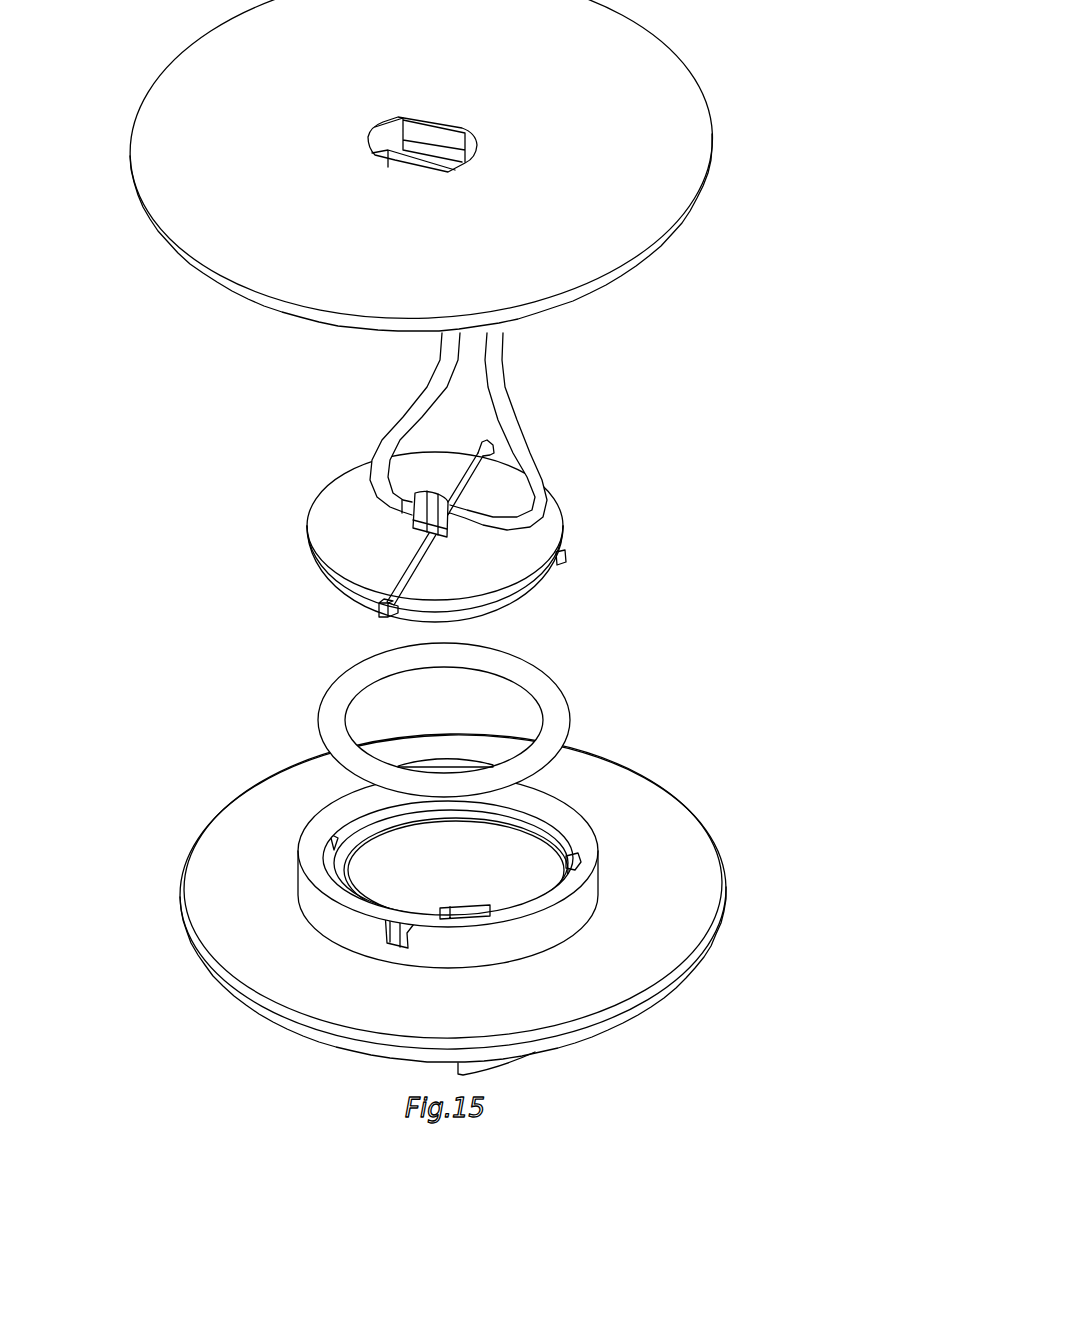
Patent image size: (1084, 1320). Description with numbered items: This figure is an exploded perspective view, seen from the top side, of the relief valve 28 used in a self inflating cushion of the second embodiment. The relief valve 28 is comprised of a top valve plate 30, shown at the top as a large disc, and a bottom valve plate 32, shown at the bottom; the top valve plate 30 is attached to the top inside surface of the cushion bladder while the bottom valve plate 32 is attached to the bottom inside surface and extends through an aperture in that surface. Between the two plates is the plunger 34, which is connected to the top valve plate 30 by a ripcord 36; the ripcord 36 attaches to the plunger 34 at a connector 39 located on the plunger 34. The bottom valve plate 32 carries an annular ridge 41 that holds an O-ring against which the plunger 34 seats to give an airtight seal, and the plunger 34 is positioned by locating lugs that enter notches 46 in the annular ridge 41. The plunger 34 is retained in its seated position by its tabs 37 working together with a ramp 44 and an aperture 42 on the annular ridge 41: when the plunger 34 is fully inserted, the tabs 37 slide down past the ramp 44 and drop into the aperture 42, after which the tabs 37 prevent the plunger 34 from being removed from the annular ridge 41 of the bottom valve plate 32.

The relief valve 28 is at (135, 72).
The top valve plate 30 is at (677, 67).
The bottom valve plate 32 is at (653, 777).
The plunger 34 is at (565, 518).
The ripcord 36 is at (507, 420).
The tab 37 is at (568, 556).
The connector 39 is at (425, 495).
The annular ridge 41 is at (317, 835).
The aperture 42 is at (463, 871).
The ramp 44 is at (577, 856).
The notch 46 is at (378, 615).